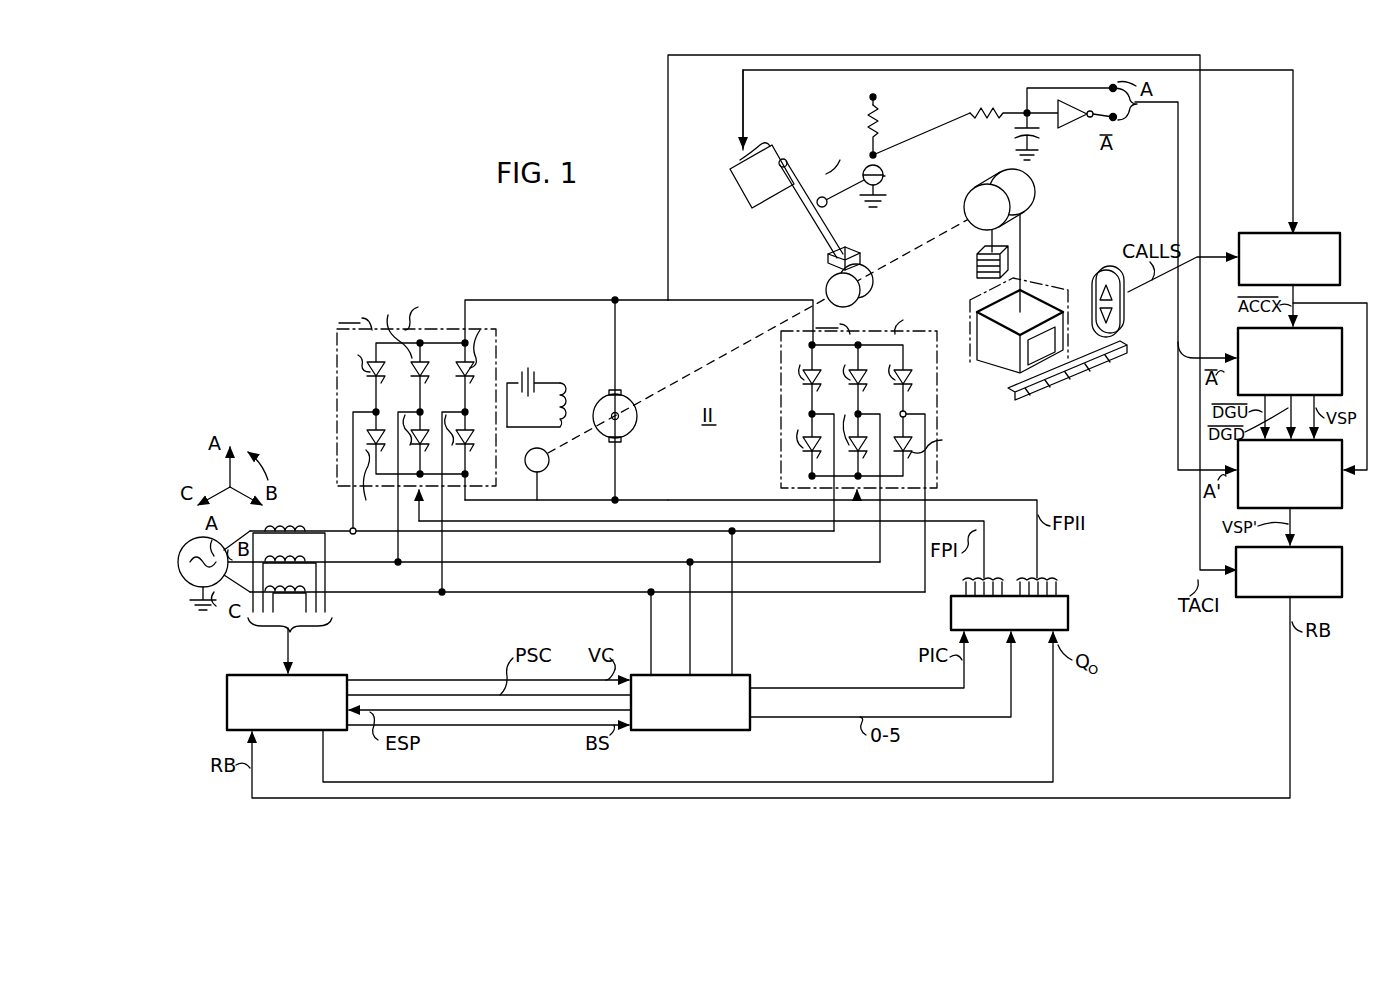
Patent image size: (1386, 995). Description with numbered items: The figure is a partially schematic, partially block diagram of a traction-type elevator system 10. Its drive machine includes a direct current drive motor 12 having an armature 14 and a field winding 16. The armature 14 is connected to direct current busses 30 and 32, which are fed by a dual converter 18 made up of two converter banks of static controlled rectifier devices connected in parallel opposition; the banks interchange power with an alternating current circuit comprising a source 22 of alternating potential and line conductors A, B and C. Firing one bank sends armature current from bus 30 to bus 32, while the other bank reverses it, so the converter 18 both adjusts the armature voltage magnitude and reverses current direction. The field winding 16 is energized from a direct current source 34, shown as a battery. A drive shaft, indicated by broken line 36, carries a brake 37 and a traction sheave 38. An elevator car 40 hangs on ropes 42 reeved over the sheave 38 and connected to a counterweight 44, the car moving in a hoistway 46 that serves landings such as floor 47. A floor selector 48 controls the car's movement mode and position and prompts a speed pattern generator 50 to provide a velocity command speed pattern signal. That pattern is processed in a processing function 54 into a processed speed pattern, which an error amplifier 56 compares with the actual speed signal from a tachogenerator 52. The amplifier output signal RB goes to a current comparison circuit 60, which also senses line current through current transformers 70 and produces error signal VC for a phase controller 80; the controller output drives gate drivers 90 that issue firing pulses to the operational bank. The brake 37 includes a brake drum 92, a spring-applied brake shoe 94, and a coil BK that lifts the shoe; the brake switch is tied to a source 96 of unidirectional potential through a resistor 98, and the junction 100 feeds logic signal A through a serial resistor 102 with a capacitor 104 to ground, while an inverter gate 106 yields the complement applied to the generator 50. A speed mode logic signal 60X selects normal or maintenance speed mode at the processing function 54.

The elevator system 10 is at (547, 249).
The drive motor 12 is at (598, 389).
The armature 14 is at (630, 396).
The field winding 16 is at (548, 410).
The dual converter 18 is at (656, 442).
The source of alternating potential 22 is at (204, 532).
The bus 30 is at (530, 302).
The bus 32 is at (494, 502).
The source of direct current voltage 34 is at (526, 376).
The drive shaft 36 is at (706, 362).
The brake 37 is at (819, 225).
The traction sheave 38 is at (1030, 188).
The elevator car 40 is at (1000, 372).
The ropes 42 is at (976, 248).
The counterweight 44 is at (976, 272).
The hoistway 46 is at (970, 300).
The floor 47 is at (1098, 372).
The floor selector 48 is at (1330, 232).
The speed pattern generator 50 is at (1238, 334).
The tachogenerator 52 is at (551, 458).
The speed pattern processing function 54 is at (1330, 512).
The error amplifier 56 is at (1343, 570).
The current comparison circuit 60 is at (228, 690).
The speed mode logic signal 60X is at (1339, 403).
The current transformers 70 is at (288, 522).
The phase controller 80 is at (746, 674).
The gate drivers 90 is at (1070, 608).
The brake drum 92 is at (868, 284).
The brake shoe 94 is at (828, 258).
The source of unidirectional potential 96 is at (872, 98).
The resistor 98 is at (880, 120).
The junction 100 is at (870, 155).
The serial resistor 102 is at (1010, 108).
The capacitor 104 is at (1020, 140).
The inverter gate 106 is at (1074, 128).